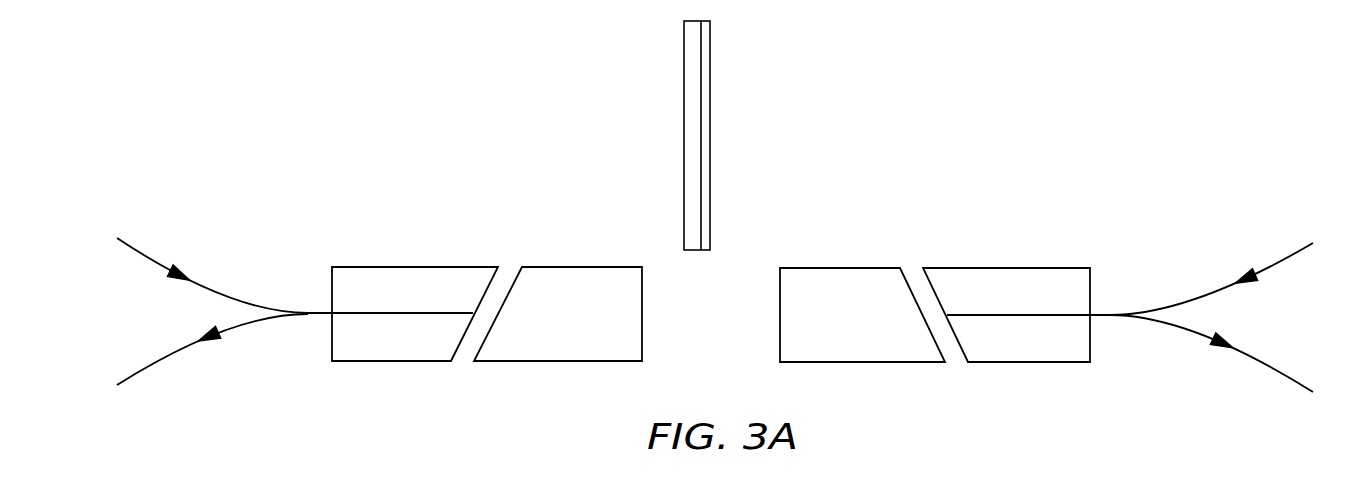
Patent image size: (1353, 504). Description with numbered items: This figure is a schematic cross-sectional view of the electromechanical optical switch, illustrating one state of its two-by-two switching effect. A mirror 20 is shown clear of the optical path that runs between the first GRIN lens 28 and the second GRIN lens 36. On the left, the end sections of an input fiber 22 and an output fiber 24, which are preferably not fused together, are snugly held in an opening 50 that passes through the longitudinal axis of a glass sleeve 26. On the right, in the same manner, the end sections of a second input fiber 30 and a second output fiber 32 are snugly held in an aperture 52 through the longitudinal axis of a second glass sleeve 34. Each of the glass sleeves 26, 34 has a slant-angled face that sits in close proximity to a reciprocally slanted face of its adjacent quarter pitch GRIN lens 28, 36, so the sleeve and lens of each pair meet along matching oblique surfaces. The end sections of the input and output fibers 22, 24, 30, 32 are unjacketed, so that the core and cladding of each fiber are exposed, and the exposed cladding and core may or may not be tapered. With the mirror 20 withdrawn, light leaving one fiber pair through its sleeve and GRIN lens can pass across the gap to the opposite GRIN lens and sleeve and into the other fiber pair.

The mirror 20 is at (685, 72).
The input fiber 22 is at (144, 258).
The output fiber 24 is at (148, 365).
The glass sleeve 26 is at (415, 267).
The first GRIN lens 28 is at (545, 362).
The second input fiber 30 is at (1277, 264).
The second output fiber 32 is at (1264, 362).
The second glass sleeve 34 is at (976, 268).
The second GRIN lens 36 is at (862, 362).
The opening 50 is at (353, 315).
The aperture 52 is at (1033, 316).